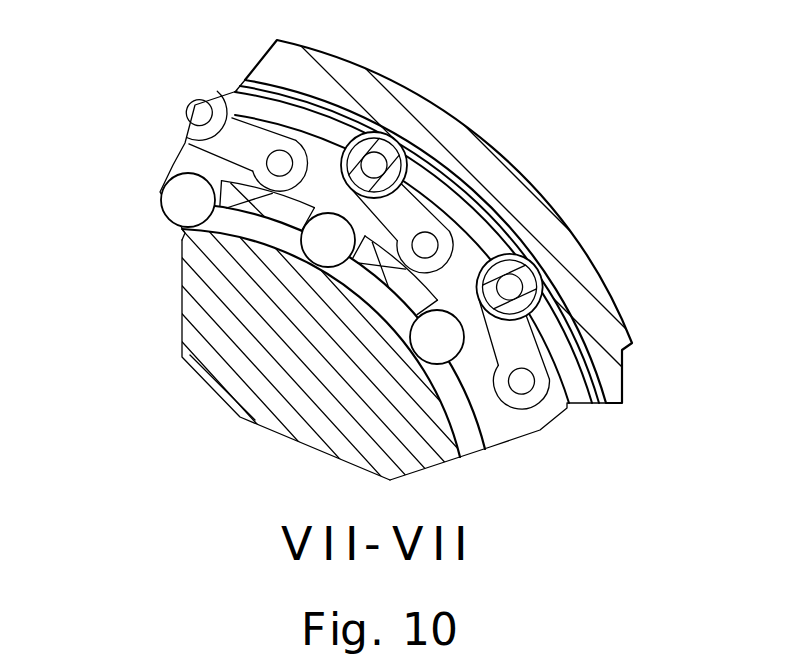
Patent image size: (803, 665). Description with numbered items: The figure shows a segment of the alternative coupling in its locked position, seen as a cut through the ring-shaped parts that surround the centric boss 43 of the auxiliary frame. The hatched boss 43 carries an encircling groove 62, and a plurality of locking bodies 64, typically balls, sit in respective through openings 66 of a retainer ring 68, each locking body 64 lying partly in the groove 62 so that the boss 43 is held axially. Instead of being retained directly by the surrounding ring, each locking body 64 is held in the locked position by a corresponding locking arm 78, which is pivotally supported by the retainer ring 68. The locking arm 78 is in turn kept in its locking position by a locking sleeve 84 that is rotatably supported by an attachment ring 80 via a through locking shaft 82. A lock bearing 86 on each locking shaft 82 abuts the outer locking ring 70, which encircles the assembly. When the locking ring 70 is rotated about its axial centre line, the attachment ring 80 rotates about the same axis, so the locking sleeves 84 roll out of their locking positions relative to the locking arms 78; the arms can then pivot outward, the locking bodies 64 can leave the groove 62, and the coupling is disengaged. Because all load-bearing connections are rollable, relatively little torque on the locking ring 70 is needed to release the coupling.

The centric boss 43 is at (215, 298).
The encircling groove 62 is at (455, 424).
The locking body 64 is at (317, 250).
The through opening 66 is at (335, 216).
The retainer ring 68 is at (202, 138).
The locking ring 70 is at (577, 272).
The locking arm 78 is at (450, 205).
The attachment ring 80 is at (443, 212).
The locking shaft 82 is at (519, 256).
The locking sleeve 84 is at (541, 296).
The lock bearing 86 is at (508, 282).